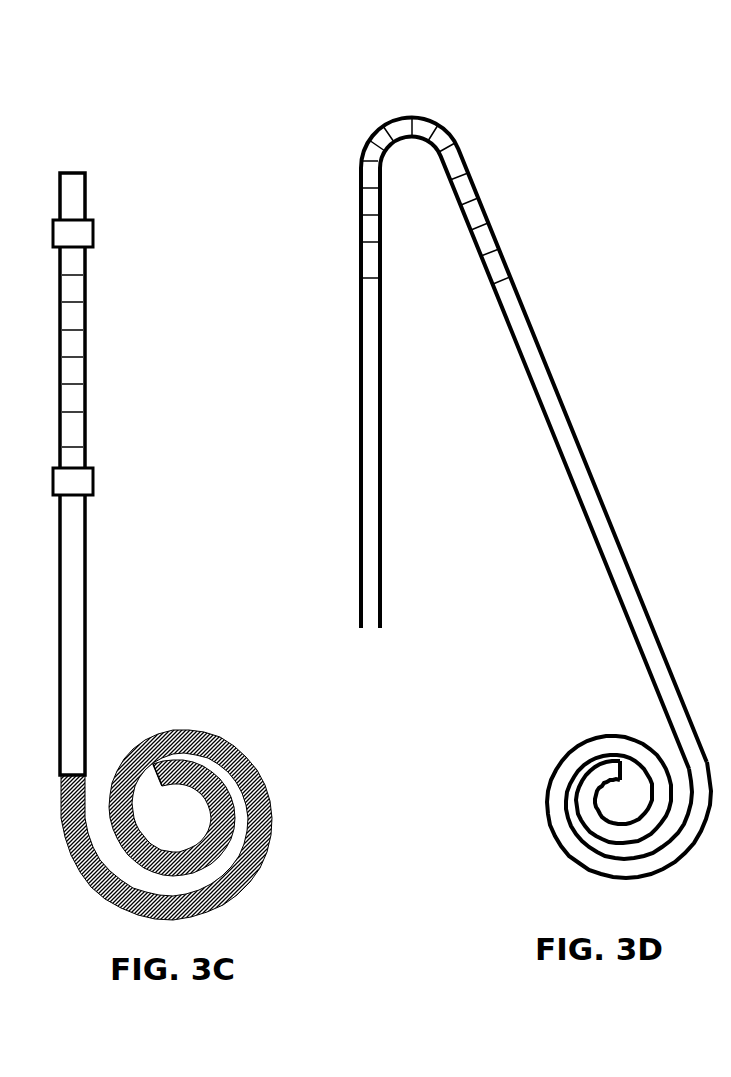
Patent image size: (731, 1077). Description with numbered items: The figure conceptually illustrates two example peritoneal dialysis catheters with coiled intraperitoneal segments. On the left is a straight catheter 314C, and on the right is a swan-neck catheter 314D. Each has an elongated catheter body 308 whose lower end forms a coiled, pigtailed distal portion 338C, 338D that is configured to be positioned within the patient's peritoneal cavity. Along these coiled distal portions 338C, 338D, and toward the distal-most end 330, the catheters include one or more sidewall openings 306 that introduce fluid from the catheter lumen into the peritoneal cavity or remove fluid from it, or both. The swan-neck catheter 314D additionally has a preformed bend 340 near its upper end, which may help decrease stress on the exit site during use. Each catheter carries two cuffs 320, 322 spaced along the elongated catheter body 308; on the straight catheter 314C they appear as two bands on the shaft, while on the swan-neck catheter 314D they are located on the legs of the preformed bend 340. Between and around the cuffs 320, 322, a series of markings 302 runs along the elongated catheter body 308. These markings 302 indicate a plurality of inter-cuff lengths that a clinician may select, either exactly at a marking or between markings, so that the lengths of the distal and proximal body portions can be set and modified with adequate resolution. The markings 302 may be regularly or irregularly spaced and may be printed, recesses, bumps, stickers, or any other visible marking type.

In FIG. 3C, the markings 302 is at (63, 331).
In FIG. 3D, the markings 302 is at (512, 278).
In FIG. 3C, the sidewall openings 306 is at (247, 872).
In FIG. 3D, the sidewall openings 306 is at (555, 834).
In FIG. 3C, the elongated catheter body 308 is at (136, 411).
In FIG. 3D, the elongated catheter body 308 is at (337, 126).
In FIG. 3C, the catheter 314C is at (122, 244).
In FIG. 3D, the swan-neck catheter 314D is at (595, 168).
In FIG. 3C, the cuff 320 is at (77, 482).
In FIG. 3D, the cuff 320 is at (363, 223).
In FIG. 3C, the cuff 322 is at (94, 231).
In FIG. 3D, the cuff 322 is at (462, 216).
In FIG. 3C, the distal-most end 330 is at (165, 785).
In FIG. 3D, the distal-most end 330 is at (622, 772).
In FIG. 3C, the coiled distal portion 338C is at (194, 694).
In FIG. 3D, the coiled distal portion 338D is at (517, 768).
In FIG. 3D, the preformed bend 340 is at (411, 120).